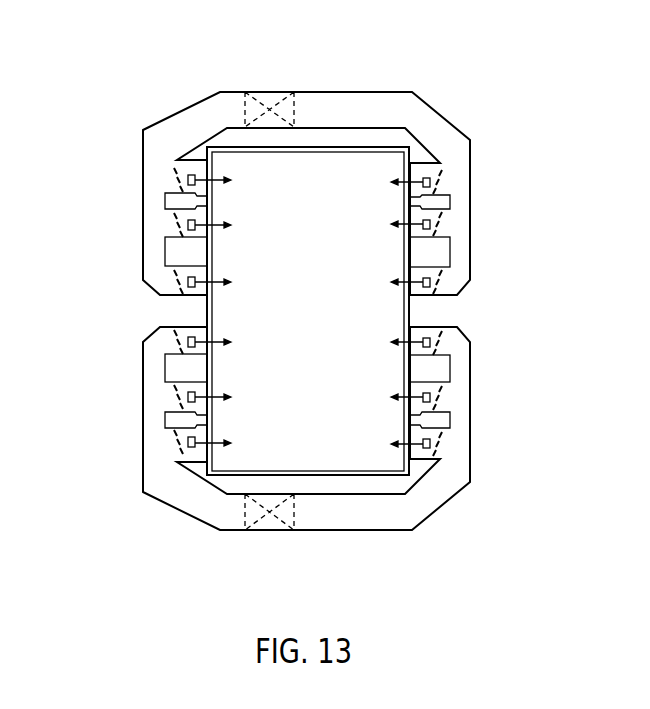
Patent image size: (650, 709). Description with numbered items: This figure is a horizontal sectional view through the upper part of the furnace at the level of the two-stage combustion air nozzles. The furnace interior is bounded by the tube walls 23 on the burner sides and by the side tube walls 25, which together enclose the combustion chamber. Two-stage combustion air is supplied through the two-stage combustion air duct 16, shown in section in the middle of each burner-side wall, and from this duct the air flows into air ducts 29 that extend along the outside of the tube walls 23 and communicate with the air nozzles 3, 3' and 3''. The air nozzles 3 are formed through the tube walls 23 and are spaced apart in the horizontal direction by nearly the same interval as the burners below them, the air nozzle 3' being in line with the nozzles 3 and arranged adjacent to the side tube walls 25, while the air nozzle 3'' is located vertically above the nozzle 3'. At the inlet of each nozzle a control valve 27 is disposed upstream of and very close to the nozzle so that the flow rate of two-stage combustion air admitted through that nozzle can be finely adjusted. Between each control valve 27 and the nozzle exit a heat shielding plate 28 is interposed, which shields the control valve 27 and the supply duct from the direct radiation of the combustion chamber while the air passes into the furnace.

The two-stage combustion air nozzle 3 is at (309, 316).
The air nozzle 3' is at (309, 307).
The air nozzle 3'' is at (309, 312).
The two-stage combustion air duct 16 is at (272, 92).
The tube wall 23 is at (218, 312).
The side tube wall 25 is at (308, 318).
The control valve 27 is at (173, 177).
The heat shielding plate 28 is at (168, 202).
The air duct 29 is at (155, 142).